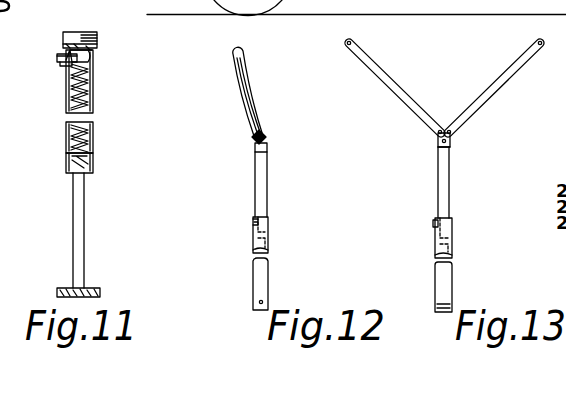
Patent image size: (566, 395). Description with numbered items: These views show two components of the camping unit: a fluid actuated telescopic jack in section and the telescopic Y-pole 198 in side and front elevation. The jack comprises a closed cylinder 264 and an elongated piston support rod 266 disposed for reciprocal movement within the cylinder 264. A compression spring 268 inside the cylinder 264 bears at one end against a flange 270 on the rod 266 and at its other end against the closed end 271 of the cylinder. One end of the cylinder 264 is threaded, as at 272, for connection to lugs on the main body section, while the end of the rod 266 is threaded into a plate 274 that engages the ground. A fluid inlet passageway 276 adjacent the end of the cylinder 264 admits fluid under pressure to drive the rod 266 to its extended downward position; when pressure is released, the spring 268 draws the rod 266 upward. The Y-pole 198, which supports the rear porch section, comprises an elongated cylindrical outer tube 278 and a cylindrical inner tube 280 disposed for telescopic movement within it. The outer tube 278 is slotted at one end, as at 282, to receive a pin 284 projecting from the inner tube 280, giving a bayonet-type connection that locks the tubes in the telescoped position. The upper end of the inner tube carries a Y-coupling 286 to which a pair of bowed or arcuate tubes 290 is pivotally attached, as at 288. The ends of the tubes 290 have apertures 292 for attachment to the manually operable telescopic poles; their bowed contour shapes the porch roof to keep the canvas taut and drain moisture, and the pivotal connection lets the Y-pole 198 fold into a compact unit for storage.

In FIG. 13, the telescopic Y-pole 198 is at (408, 83).
In FIG. 11, the closed cylinder 264 is at (93, 100).
In FIG. 11, the piston support rod 266 is at (84, 205).
In FIG. 11, the compression spring 268 is at (88, 138).
In FIG. 11, the flange 270 is at (93, 168).
In FIG. 11, the closed end of the cylinder 271 is at (92, 70).
In FIG. 11, the threaded end 272 is at (97, 40).
In FIG. 11, the plate 274 is at (97, 287).
In FIG. 11, the fluid inlet passageway 276 is at (58, 60).
In FIG. 12, the outer tube 278 is at (263, 277).
In FIG. 13, the outer tube 278 is at (452, 242).
In FIG. 12, the inner tube 280 is at (268, 181).
In FIG. 13, the inner tube 280 is at (449, 195).
In FIG. 12, the slot 282 is at (267, 232).
In FIG. 12, the pin 284 is at (253, 222).
In FIG. 13, the pin 284 is at (435, 232).
In FIG. 12, the Y-coupling 286 is at (267, 148).
In FIG. 13, the Y-coupling 286 is at (447, 153).
In FIG. 12, the pivotal attachment 288 is at (267, 137).
In FIG. 13, the pivotal attachment 288 is at (448, 130).
In FIG. 12, the bowed tubes 290 is at (256, 80).
In FIG. 13, the bowed tubes 290 is at (403, 110).
In FIG. 13, the apertures 292 is at (352, 43).